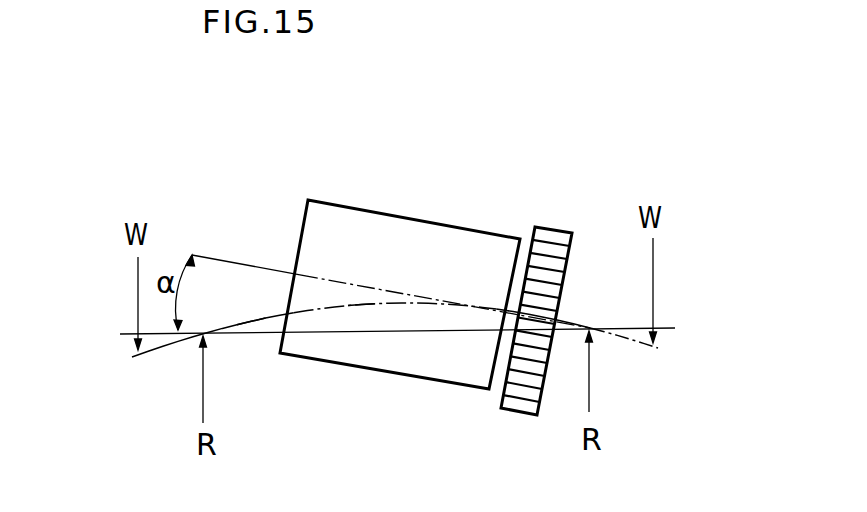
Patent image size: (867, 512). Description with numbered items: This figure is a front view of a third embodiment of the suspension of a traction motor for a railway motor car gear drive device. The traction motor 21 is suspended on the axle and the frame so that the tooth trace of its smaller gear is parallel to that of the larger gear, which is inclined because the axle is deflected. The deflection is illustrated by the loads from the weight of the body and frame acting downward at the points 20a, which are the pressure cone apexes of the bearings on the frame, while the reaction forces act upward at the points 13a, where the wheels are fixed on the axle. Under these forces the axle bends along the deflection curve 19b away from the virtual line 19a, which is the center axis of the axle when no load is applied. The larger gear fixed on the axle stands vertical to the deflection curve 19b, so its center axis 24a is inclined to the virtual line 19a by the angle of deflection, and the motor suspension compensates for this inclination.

The fixing points of the wheels 13a is at (203, 337).
The virtual line 19a is at (257, 337).
The deflection curve 19b is at (366, 305).
The pressure cone apexes of the bearings 20a is at (135, 355).
The traction motor 21 is at (350, 200).
The center axis of the larger gear 24a is at (367, 283).